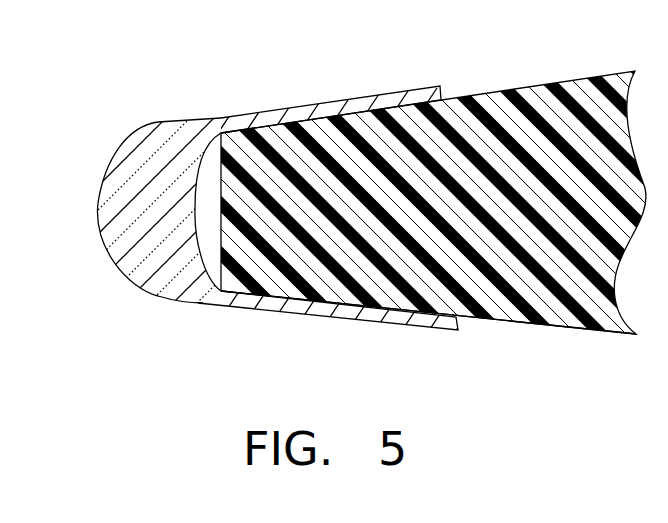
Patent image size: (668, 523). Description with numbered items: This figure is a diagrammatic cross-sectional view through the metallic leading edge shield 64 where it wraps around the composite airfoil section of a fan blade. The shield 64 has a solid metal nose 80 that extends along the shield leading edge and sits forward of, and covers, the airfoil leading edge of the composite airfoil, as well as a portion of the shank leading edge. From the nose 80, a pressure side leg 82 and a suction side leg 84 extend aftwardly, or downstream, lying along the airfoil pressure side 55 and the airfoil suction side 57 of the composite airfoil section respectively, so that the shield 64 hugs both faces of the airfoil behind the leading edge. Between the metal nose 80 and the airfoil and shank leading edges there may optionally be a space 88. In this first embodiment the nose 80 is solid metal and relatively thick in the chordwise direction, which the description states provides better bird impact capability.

The airfoil pressure side 55 is at (553, 74).
The airfoil suction side 57 is at (547, 320).
The metallic leading edge shield 64 is at (150, 284).
The nose 80 is at (90, 190).
The pressure side leg 82 is at (263, 100).
The suction side leg 84 is at (333, 309).
The space 88 is at (203, 193).